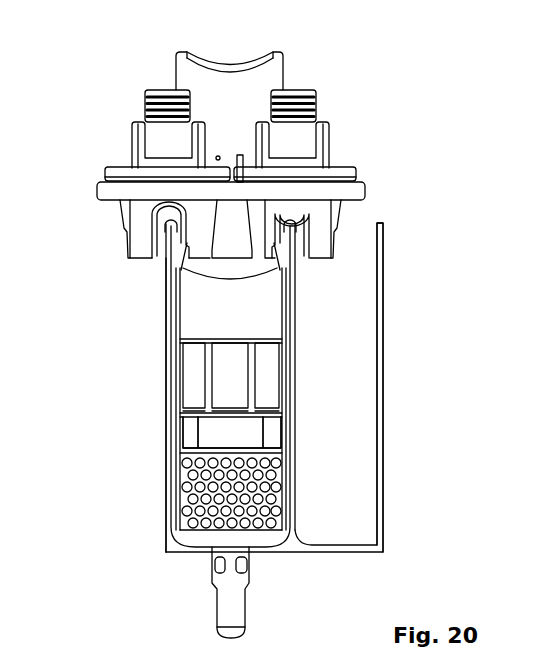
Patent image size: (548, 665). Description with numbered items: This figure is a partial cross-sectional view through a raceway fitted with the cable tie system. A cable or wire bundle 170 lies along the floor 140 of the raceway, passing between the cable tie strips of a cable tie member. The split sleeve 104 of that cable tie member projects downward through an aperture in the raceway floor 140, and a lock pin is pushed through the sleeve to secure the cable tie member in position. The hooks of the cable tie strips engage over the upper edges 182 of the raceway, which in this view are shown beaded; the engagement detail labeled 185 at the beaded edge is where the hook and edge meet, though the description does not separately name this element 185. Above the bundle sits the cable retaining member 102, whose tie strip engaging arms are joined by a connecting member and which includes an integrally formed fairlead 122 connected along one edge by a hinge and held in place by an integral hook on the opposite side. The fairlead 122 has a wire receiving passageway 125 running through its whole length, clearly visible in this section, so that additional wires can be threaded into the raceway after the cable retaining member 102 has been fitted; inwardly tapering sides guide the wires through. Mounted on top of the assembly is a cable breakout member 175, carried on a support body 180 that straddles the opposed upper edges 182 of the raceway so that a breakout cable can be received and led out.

The cable breakout member 175 is at (228, 61).
The support body 180 is at (333, 150).
The upper edges of the raceway 182 is at (382, 222).
The retaining clip 185 is at (162, 255).
The cable retaining member 102 is at (168, 337).
The fairlead 122 is at (225, 433).
The wire receiving passageway 125 is at (225, 433).
The cable or wire bundle 170 is at (168, 472).
The floor of the raceway 140 is at (350, 552).
The split sleeve 104 is at (244, 607).